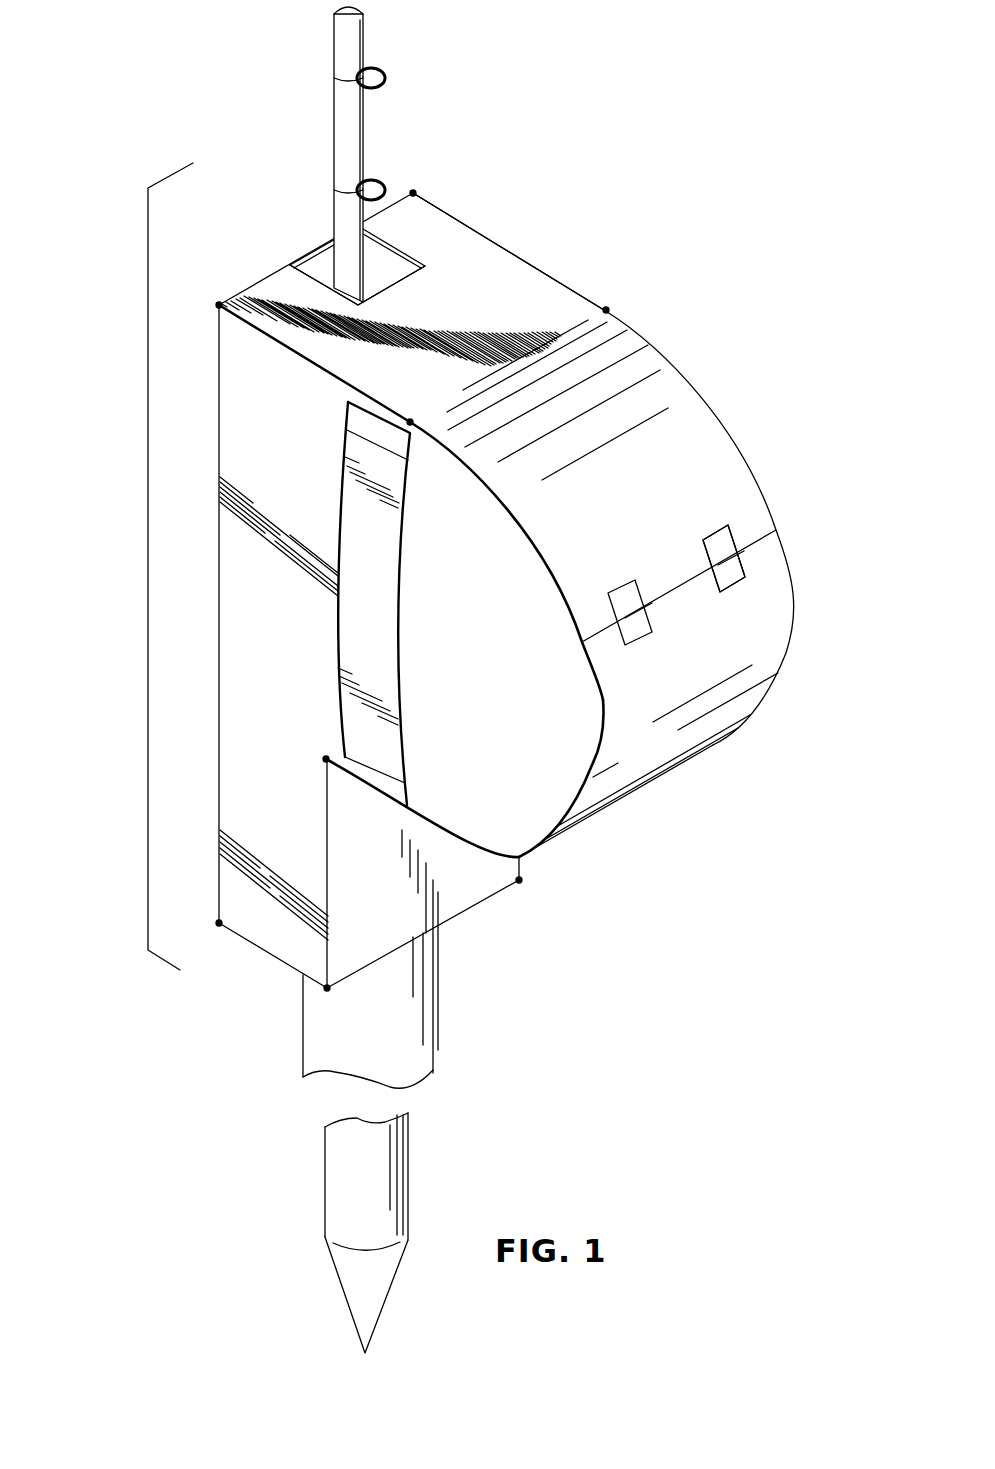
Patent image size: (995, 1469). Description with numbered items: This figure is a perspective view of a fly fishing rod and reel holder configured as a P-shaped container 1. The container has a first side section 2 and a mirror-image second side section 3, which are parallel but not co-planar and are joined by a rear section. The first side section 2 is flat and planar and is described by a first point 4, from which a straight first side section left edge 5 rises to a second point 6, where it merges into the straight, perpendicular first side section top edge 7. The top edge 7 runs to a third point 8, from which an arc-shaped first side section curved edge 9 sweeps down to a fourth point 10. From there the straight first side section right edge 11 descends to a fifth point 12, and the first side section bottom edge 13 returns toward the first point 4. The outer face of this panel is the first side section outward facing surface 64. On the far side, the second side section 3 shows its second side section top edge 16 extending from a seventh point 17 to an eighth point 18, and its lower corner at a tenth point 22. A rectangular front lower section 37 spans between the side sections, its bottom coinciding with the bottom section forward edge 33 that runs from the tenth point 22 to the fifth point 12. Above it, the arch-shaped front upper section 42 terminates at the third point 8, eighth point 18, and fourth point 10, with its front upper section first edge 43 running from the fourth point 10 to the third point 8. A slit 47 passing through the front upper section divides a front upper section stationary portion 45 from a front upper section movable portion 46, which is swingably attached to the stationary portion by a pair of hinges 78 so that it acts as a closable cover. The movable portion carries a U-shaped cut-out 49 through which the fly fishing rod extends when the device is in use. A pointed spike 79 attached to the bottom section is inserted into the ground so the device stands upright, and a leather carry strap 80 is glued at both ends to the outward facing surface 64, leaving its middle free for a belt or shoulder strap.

The container 1 is at (148, 568).
The first side section 2 is at (258, 661).
The second side section 3 is at (724, 352).
The first point 4 is at (219, 923).
The first side section left edge 5 is at (219, 628).
The second point 6 is at (219, 305).
The first side section top edge 7 is at (303, 360).
The third point 8 is at (410, 422).
The first side section curved edge 9 is at (582, 677).
The fourth point 10 is at (326, 759).
The first side section right edge 11 is at (327, 847).
The fifth point 12 is at (327, 988).
The first side section bottom edge 13 is at (273, 957).
The second side section top edge 16 is at (502, 246).
The seventh point 17 is at (413, 193).
The eighth point 18 is at (606, 310).
The tenth point 22 is at (519, 880).
The bottom section forward edge 33 is at (457, 917).
The front lower section 37 is at (371, 911).
The front upper section 42 is at (627, 793).
The front upper section first edge 43 is at (599, 727).
The front upper section stationary portion 45 is at (684, 659).
The front upper section movable portion 46 is at (614, 489).
The slit 47 is at (680, 582).
The cut-out 49 is at (318, 265).
The first side section outward facing surface 64 is at (451, 777).
The hinges 78 is at (740, 570).
The spike 79 is at (303, 1045).
The carry strap 80 is at (352, 571).